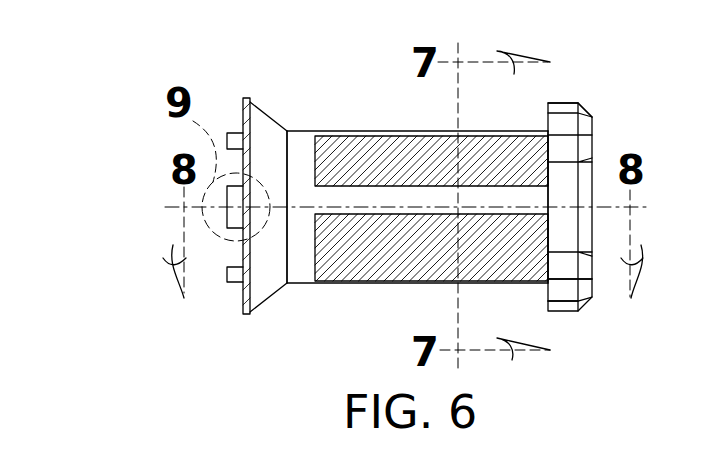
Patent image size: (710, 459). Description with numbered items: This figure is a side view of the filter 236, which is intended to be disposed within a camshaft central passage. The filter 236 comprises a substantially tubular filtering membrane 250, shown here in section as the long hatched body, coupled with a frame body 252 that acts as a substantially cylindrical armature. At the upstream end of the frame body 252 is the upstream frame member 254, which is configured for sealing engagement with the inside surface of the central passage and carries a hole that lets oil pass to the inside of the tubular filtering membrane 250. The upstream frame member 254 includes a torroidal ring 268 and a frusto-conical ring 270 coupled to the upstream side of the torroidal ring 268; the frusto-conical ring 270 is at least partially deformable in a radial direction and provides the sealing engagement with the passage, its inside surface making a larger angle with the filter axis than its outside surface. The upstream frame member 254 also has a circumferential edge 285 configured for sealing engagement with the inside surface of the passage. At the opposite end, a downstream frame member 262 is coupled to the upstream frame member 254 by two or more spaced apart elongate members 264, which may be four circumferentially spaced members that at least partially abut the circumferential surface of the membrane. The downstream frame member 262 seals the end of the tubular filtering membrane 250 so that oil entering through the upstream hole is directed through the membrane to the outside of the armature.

The filter 236 is at (608, 94).
The substantially tubular filtering membrane 250 is at (372, 135).
The frame body 252 is at (545, 321).
The upstream frame member 254 is at (266, 299).
The downstream frame member 262 is at (572, 311).
The elongate members 264 is at (518, 195).
The torroidal ring 268 is at (300, 133).
The frusto-conical ring 270 is at (264, 128).
The circumferential edge 285 is at (246, 314).